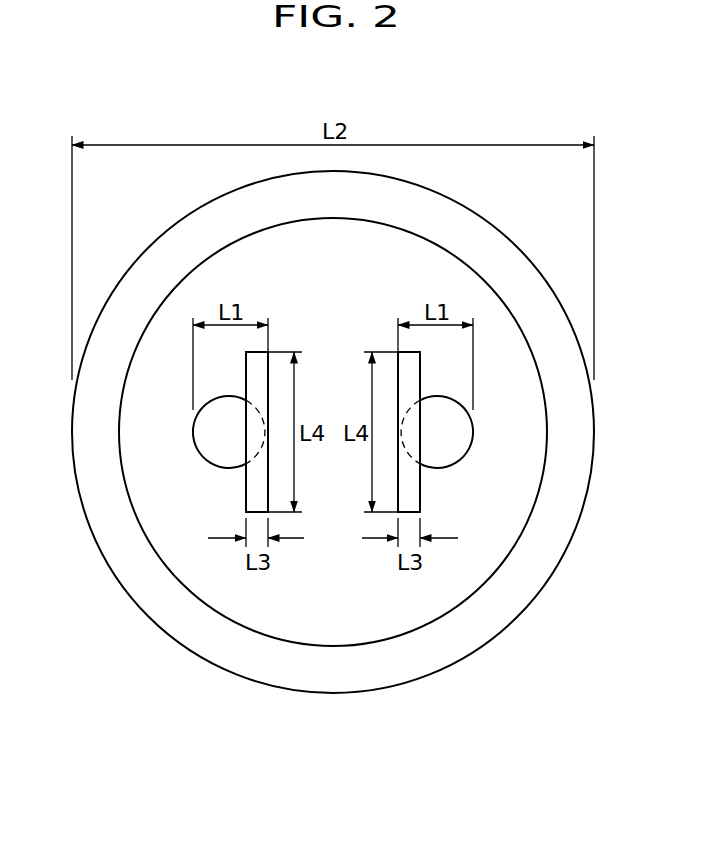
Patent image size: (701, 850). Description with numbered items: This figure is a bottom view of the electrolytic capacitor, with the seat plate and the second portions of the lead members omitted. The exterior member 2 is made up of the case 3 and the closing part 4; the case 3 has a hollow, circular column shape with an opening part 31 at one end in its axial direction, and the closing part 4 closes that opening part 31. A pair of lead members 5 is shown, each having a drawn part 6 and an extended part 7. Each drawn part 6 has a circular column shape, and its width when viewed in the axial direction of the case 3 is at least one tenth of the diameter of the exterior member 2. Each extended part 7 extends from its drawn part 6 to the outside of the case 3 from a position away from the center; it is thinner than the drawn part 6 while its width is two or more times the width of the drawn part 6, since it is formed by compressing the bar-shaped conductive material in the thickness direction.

The exterior member 2 is at (377, 737).
The case 3 is at (372, 678).
The opening part 31 is at (427, 254).
The closing part 4 is at (302, 612).
The lead member 5 is at (333, 437).
The drawn part 6 is at (208, 448).
The extended part 7 is at (257, 487).